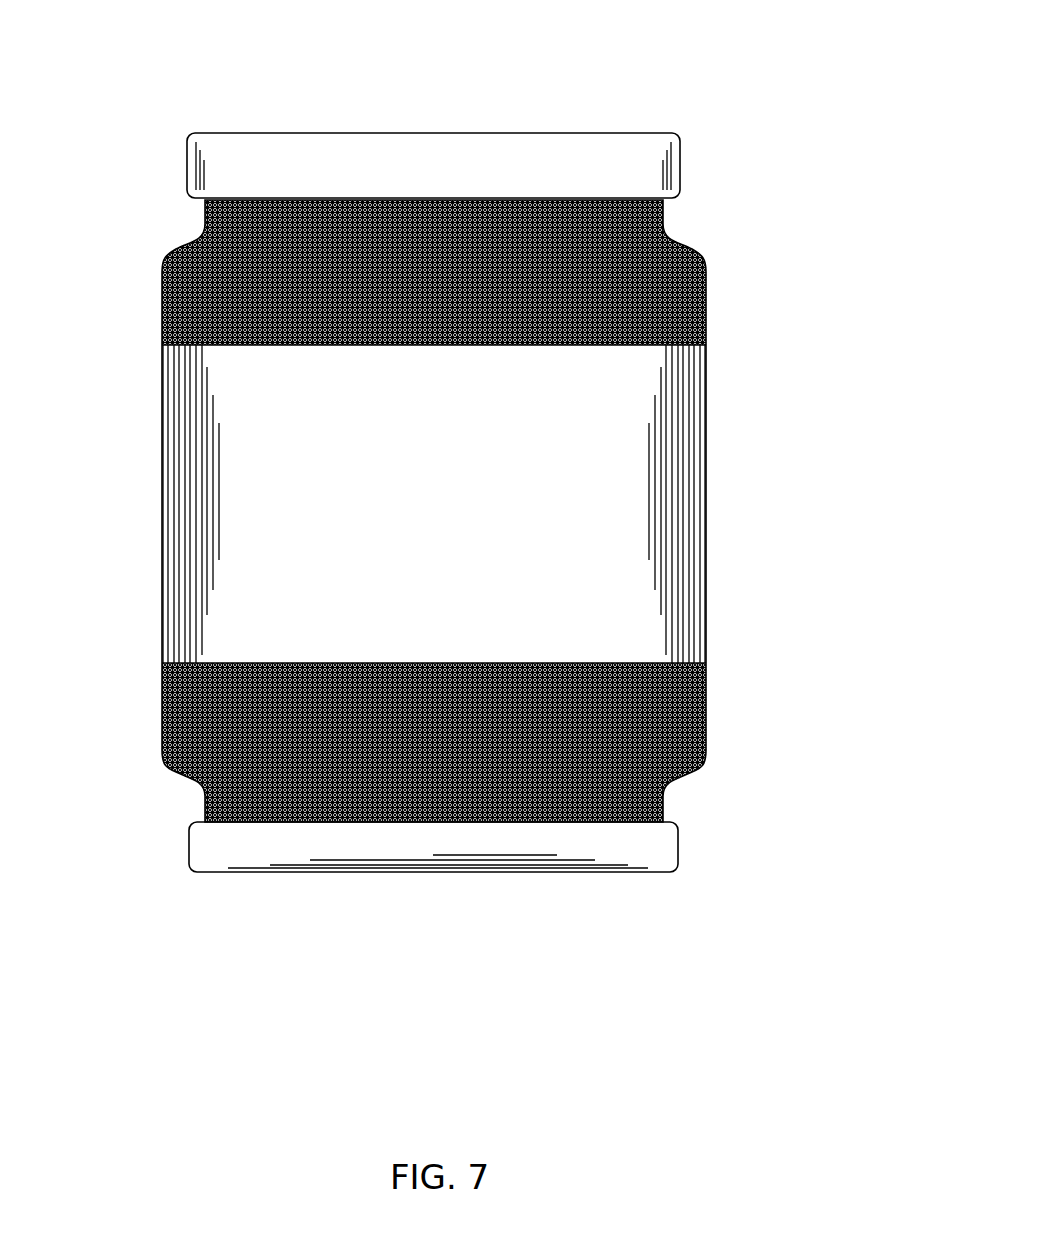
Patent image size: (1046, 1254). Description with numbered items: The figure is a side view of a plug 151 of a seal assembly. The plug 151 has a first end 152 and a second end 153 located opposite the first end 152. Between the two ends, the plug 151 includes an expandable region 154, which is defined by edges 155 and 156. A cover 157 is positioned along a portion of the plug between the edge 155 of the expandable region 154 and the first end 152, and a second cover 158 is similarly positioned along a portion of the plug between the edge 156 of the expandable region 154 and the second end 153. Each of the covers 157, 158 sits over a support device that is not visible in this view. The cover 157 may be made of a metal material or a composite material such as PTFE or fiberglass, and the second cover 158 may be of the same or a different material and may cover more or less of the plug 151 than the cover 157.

The plug 151 is at (446, 441).
The first end 152 is at (163, 153).
The second end 153 is at (178, 845).
The expandable region 154 is at (713, 345).
The edge 155 is at (730, 337).
The edge 156 is at (712, 672).
The cover 157 is at (706, 270).
The second cover 158 is at (706, 750).